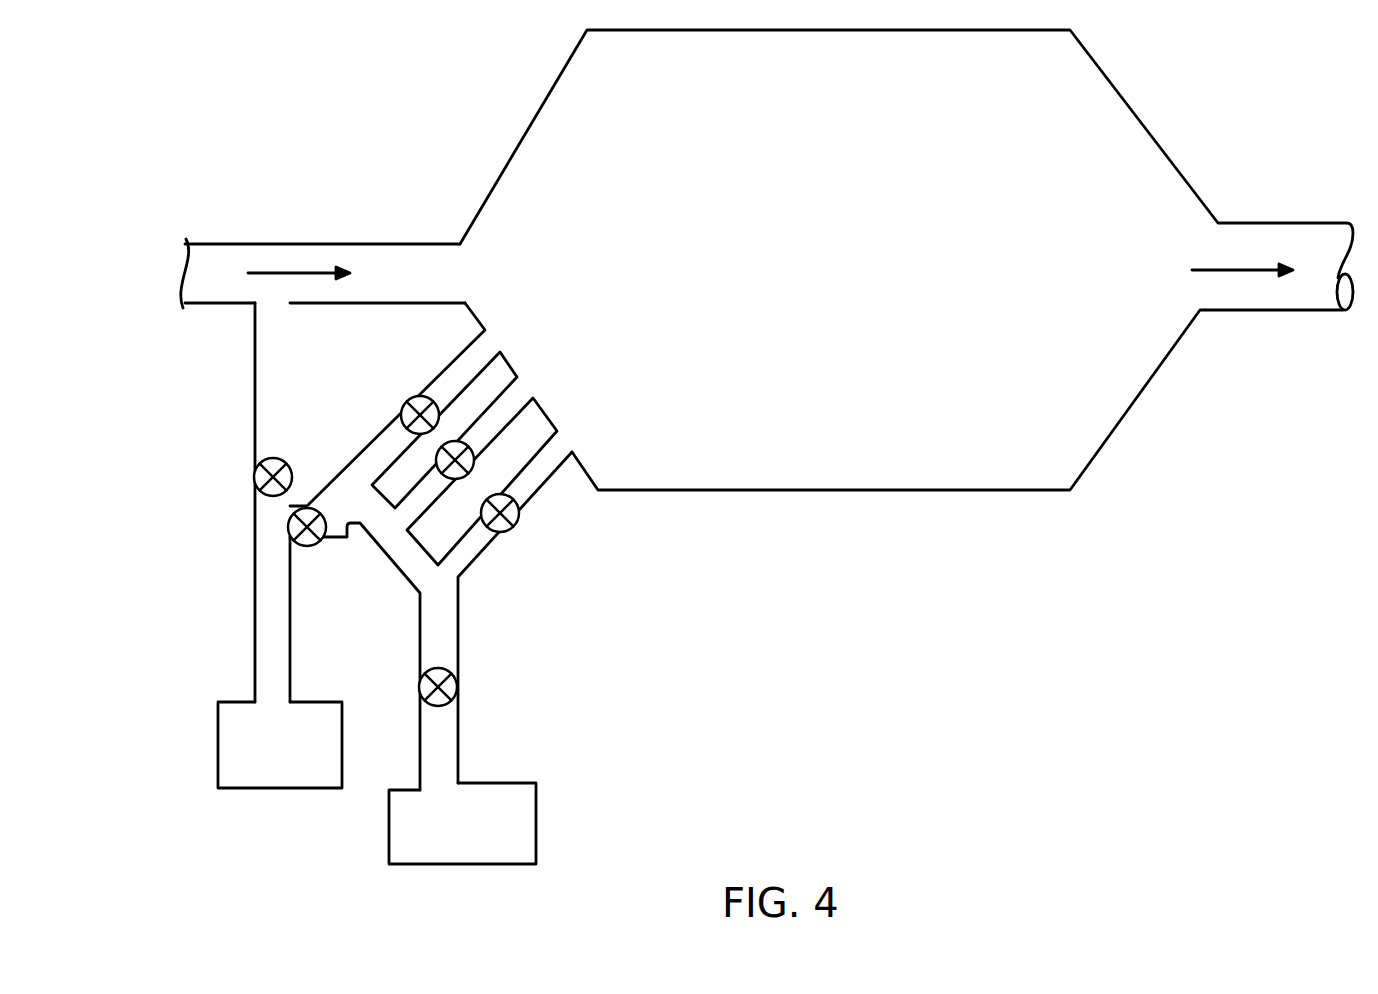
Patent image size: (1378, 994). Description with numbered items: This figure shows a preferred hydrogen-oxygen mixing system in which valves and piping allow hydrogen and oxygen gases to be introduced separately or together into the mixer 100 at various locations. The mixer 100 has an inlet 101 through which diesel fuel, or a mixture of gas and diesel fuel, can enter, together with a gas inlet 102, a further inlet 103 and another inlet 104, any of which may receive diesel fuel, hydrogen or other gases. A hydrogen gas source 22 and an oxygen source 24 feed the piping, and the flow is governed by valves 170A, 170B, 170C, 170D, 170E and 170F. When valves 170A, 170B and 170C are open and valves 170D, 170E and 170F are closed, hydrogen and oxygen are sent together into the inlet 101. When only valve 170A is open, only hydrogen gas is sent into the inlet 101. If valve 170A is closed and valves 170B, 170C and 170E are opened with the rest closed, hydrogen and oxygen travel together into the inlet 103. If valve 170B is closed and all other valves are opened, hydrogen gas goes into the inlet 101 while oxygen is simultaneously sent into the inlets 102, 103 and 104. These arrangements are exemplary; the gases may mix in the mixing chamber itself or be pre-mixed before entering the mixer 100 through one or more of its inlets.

The mixer 100 is at (1103, 170).
The inlet 101 is at (268, 308).
The gas inlet 102 is at (502, 328).
The inlet 103 is at (530, 383).
The inlet 104 is at (570, 441).
The hydrogen gas source 22 is at (230, 750).
The oxygen source 24 is at (527, 823).
The valve 170A is at (258, 473).
The valve 170B is at (293, 540).
The valve 170C is at (450, 687).
The valve 170D is at (420, 400).
The valve 170E is at (445, 460).
The valve 170F is at (498, 527).